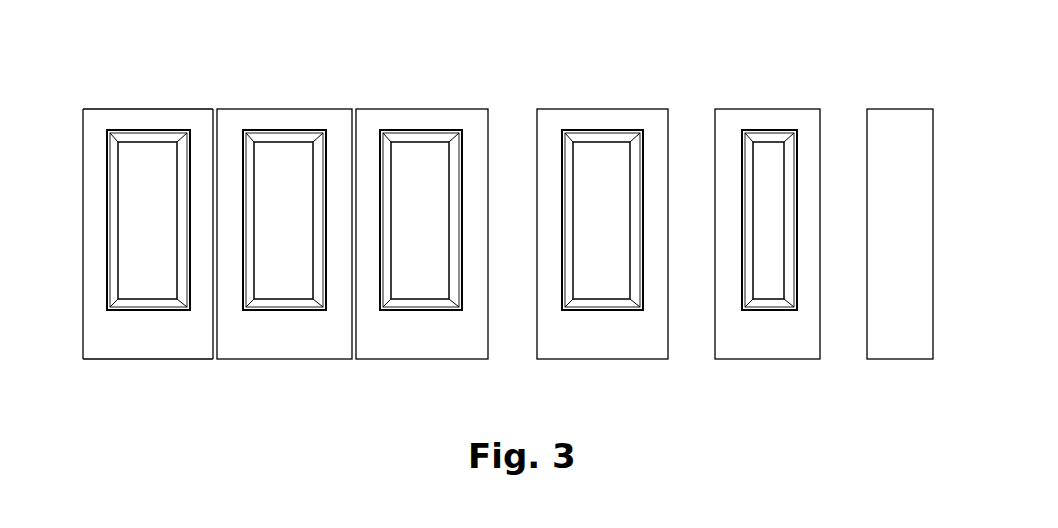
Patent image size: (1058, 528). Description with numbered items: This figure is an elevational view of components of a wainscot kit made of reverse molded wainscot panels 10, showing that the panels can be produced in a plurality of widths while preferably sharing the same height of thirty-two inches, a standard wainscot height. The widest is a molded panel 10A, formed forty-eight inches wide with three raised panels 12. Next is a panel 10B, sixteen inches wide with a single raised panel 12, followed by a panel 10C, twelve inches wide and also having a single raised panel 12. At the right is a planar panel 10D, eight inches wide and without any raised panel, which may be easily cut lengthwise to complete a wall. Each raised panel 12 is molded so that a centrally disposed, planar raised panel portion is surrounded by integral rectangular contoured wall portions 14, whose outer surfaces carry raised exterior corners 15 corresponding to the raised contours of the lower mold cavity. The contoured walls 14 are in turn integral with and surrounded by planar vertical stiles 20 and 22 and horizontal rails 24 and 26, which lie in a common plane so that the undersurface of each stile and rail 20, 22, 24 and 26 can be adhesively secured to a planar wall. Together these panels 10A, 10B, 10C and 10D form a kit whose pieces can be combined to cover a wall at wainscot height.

The wainscot panel 10 is at (758, 110).
The molded panel 10A is at (267, 117).
The panel 10B is at (613, 113).
The panel 10C is at (767, 188).
The planar panel 10D is at (907, 117).
The raised panel 12 is at (110, 152).
The contoured wall portion 14 is at (158, 133).
The raised exterior corner 15 is at (187, 137).
The vertical stile 20 is at (90, 240).
The vertical stile 22 is at (200, 262).
The horizontal rail 24 is at (148, 338).
The horizontal rail 26 is at (130, 118).